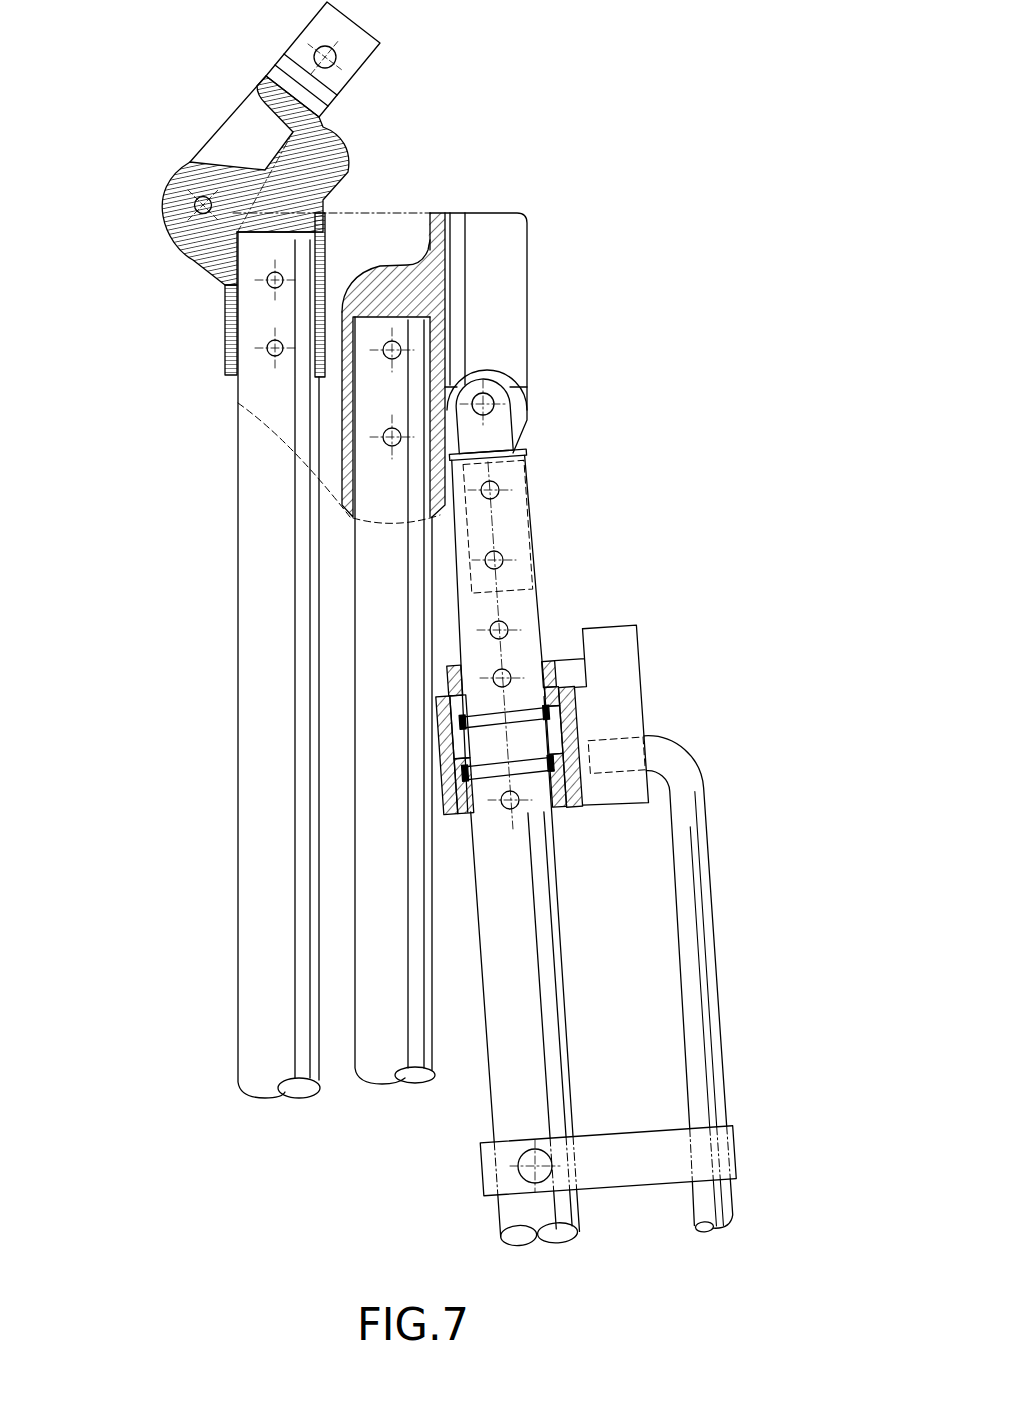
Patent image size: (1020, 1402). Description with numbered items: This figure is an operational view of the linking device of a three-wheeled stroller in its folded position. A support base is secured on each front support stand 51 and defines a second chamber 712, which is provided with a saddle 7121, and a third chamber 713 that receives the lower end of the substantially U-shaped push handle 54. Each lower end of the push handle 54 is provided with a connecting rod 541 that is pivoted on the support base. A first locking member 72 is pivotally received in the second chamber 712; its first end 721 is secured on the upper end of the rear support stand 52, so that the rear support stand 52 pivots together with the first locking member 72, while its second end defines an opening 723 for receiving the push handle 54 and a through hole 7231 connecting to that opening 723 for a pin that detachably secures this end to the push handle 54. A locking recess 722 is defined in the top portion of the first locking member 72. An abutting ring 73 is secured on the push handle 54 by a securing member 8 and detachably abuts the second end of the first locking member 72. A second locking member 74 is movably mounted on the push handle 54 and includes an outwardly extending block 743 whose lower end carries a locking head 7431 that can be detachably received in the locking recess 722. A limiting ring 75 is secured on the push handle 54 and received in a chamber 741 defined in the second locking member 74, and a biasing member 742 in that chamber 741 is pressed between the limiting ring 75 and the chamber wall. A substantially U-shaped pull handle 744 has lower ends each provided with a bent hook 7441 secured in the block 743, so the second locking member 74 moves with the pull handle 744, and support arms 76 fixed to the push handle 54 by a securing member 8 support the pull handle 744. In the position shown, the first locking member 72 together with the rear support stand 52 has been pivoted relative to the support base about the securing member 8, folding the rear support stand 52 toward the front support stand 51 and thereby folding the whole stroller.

The first locking member 72 is at (163, 208).
The first end 721 is at (225, 318).
The locking recess 722 is at (230, 140).
The opening 723 is at (353, 68).
The through hole 7231 is at (336, 55).
The second chamber 712 is at (325, 447).
The saddle 7121 is at (397, 263).
The third chamber 713 is at (520, 290).
The securing member 8 is at (395, 352).
The connecting rod 541 is at (527, 507).
The push handle 54 is at (553, 967).
The rear support stand 52 is at (245, 637).
The front support stand 51 is at (378, 1070).
The abutting ring 73 is at (548, 668).
The locking head 7431 is at (627, 640).
The chamber 741 is at (552, 731).
The biasing member 742 is at (533, 758).
The bent hook 7441 is at (618, 757).
The second locking member 74 is at (450, 815).
The limiting ring 75 is at (557, 813).
The block 743 is at (623, 803).
The pull handle 744 is at (710, 943).
The support arm 76 is at (642, 1145).